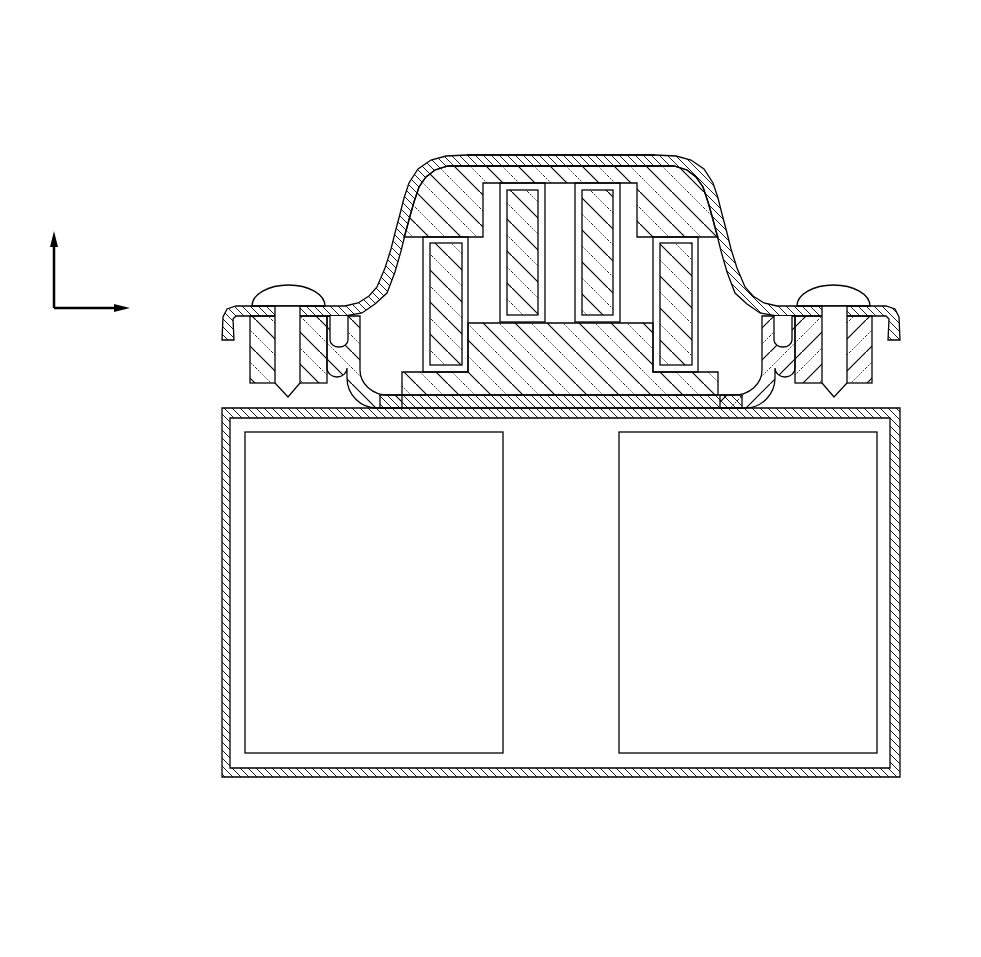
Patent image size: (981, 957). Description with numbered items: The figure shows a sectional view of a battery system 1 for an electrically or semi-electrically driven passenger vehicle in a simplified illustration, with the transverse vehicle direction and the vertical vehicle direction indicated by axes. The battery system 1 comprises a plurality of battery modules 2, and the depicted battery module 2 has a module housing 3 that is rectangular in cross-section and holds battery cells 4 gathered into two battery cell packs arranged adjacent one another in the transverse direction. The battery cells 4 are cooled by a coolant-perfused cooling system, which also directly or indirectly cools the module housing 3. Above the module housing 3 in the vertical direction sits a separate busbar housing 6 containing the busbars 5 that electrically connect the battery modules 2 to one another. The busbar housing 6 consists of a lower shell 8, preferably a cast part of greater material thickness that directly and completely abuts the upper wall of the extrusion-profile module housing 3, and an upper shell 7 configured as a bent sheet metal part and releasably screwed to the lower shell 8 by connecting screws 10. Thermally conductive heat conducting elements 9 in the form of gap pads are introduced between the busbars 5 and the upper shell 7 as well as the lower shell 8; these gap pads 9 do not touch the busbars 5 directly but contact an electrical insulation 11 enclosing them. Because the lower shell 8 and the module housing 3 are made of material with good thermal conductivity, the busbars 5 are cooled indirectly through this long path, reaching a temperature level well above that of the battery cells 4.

The battery system 1 is at (286, 93).
The battery module 2 is at (192, 598).
The module housing 3 is at (565, 777).
The battery cells 4 is at (363, 733).
The busbars 5 is at (518, 202).
The busbar housing 6 is at (740, 188).
The upper shell 7 is at (596, 163).
The lower shell 8 is at (262, 360).
The heat conducting elements 9 is at (670, 195).
The connecting screws 10 is at (288, 285).
The electrical insulation 11 is at (497, 208).